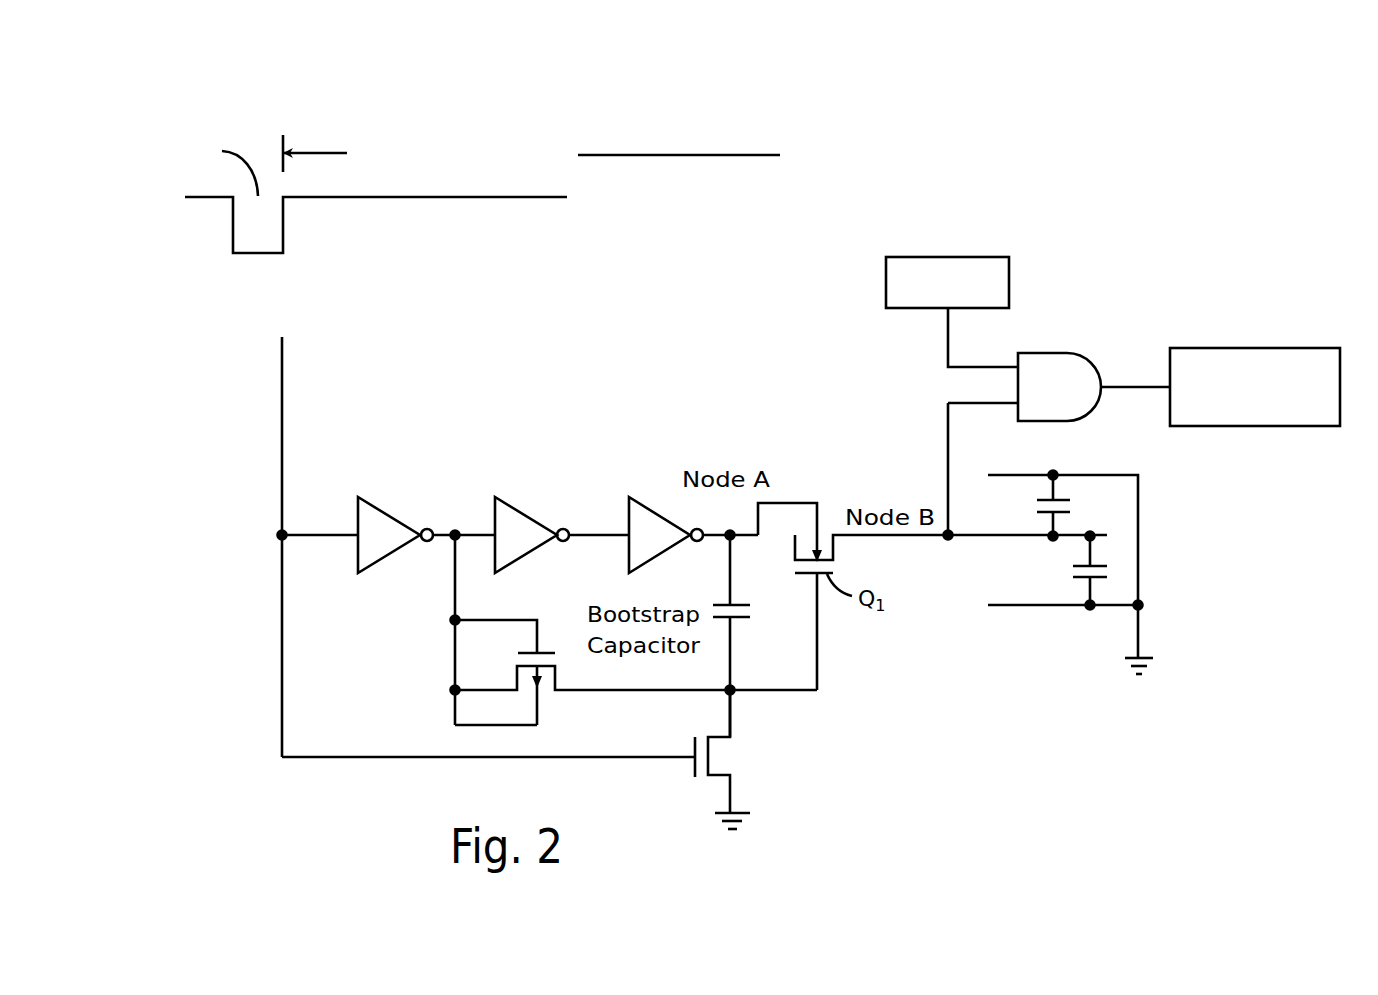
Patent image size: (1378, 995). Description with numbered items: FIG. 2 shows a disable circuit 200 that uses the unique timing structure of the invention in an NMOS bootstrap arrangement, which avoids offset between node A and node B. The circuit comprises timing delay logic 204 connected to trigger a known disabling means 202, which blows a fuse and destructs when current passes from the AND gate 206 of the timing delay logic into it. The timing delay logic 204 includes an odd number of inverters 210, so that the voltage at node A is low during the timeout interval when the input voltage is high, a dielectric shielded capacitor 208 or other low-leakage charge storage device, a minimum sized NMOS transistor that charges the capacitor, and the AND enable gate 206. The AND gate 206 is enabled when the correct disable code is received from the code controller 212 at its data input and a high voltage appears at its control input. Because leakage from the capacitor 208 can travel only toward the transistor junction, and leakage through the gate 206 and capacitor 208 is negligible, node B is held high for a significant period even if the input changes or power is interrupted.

The disable circuit 200 is at (576, 68).
The disabling means 202 is at (1242, 348).
The timing delay logic 204 is at (221, 518).
The AND gate 206 is at (1050, 353).
The dielectric shielded capacitor 208 is at (1177, 550).
The inverters 210 is at (521, 510).
The code controller 212 is at (937, 256).